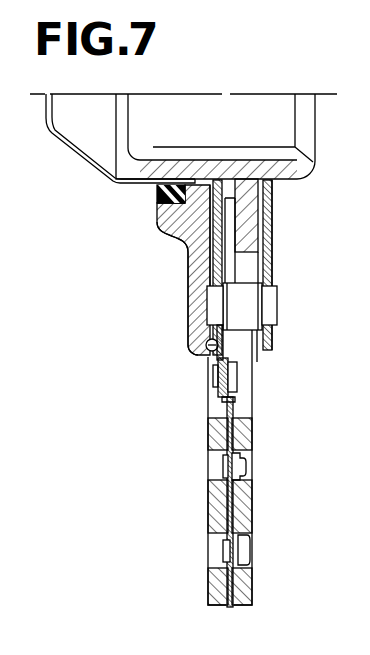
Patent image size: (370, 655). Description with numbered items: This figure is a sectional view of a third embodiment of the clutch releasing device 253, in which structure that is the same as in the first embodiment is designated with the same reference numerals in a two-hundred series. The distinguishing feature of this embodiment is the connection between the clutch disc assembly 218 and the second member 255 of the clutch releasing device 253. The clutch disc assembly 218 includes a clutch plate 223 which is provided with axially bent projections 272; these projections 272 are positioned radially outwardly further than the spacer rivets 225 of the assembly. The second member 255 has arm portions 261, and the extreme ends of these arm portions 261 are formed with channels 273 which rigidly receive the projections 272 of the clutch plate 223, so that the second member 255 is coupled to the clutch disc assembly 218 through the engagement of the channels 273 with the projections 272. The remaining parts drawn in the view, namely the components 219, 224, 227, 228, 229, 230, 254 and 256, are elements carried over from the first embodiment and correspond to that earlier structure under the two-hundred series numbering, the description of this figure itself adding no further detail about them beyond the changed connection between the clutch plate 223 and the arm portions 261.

The clutch disc assembly 218 is at (281, 193).
The housing 219 is at (245, 172).
The clutch plate 223 is at (219, 258).
The sleeve 224 is at (263, 257).
The spacer rivets 225 is at (255, 307).
The casing 227 is at (252, 489).
The coupling block 228 is at (213, 376).
The bearing block 229 is at (213, 512).
The roller 230 is at (252, 520).
The clutch releasing device 253 is at (146, 198).
The cover 254 is at (82, 158).
The second member 255 is at (193, 232).
The projection 256 is at (157, 203).
The arm portions 261 is at (187, 318).
The axially bent projections 272 is at (219, 343).
The channels 273 is at (193, 344).